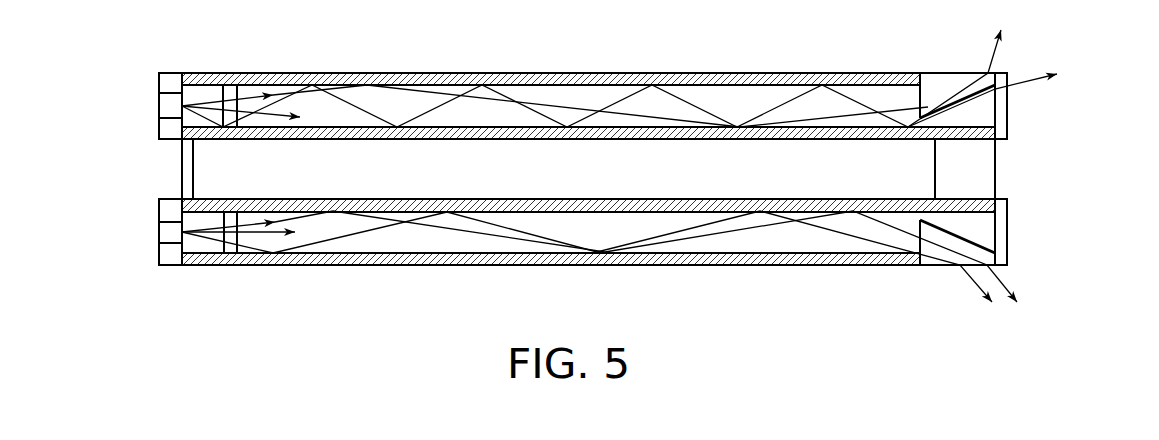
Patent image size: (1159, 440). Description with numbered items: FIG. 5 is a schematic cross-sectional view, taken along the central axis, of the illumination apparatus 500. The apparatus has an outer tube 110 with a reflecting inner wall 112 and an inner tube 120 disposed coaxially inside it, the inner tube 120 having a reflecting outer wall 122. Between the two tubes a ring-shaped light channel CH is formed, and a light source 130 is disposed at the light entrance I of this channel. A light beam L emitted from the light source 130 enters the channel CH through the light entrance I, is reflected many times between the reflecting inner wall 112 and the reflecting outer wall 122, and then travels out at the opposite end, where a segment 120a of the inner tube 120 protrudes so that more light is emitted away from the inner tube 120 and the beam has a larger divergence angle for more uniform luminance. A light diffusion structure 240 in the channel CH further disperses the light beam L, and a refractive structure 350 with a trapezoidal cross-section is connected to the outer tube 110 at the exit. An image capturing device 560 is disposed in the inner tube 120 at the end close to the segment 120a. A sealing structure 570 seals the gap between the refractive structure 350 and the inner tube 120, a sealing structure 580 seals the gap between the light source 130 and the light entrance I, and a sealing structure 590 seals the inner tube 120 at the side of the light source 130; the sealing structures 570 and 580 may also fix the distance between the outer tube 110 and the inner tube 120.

The illumination apparatus 500 is at (1130, 354).
The light source 130 is at (172, 107).
The sealing structure 580 is at (170, 213).
The sealing structure 590 is at (188, 171).
The image capturing device 560 is at (978, 162).
The outer tube 110 is at (350, 80).
The inner tube 120 is at (356, 133).
The segment of the inner tube 120a is at (985, 203).
The light diffusion structure 240 is at (232, 90).
The refractive structure 350 is at (943, 85).
The sealing structure 570 is at (1002, 237).
The reflecting outer wall 122 is at (629, 214).
The reflecting inner wall 112 is at (723, 253).
The ring-shaped light channel CH is at (396, 240).
The light beam L is at (463, 233).
The light entrance I is at (182, 246).